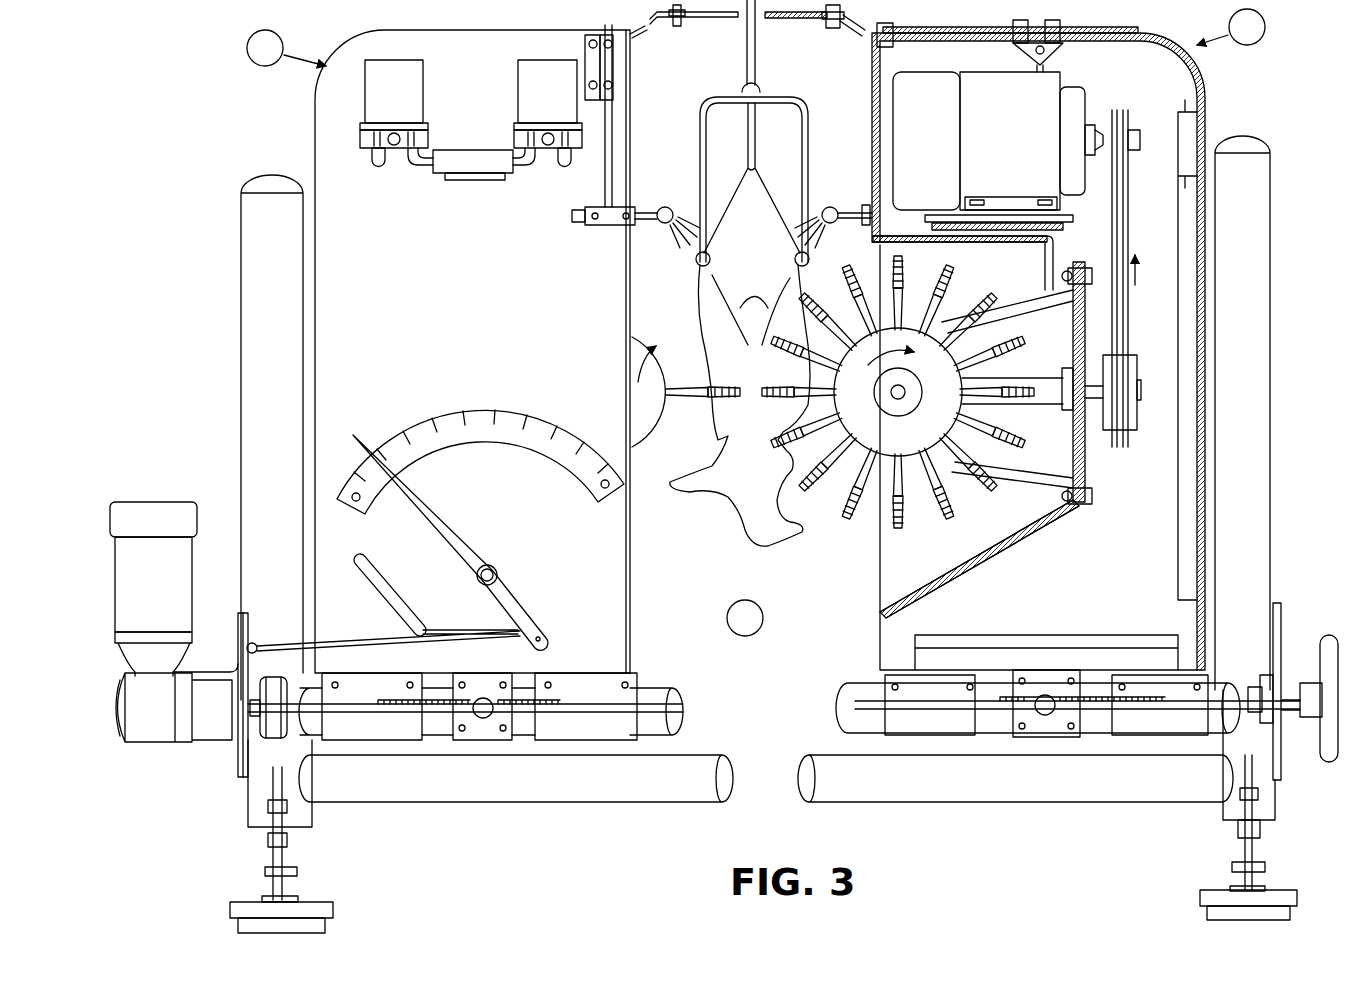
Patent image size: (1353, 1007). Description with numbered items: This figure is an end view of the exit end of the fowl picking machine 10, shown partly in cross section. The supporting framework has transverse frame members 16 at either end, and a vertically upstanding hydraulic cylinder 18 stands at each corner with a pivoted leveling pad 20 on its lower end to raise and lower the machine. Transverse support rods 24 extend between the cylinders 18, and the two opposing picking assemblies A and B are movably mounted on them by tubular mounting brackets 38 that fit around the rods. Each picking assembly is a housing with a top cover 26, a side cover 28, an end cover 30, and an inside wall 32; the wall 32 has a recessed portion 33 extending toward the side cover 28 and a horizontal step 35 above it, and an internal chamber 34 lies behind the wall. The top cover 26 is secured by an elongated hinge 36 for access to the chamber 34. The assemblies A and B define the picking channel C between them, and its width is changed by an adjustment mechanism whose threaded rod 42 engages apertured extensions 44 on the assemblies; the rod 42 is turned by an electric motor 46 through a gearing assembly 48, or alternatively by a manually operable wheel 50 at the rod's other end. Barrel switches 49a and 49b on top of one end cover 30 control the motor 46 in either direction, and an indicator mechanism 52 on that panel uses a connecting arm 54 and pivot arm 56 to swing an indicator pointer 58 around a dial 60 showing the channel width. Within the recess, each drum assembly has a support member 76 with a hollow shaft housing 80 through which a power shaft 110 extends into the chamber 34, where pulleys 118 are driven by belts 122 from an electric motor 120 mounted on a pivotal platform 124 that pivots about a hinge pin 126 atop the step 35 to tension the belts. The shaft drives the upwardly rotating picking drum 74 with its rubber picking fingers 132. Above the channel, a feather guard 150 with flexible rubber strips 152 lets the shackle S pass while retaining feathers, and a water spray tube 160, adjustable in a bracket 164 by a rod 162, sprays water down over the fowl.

The fowl picking machine 10 is at (1268, 72).
The transverse frame member 16 is at (1052, 797).
The hydraulic cylinder 18 is at (248, 385).
The leveling pad 20 is at (236, 906).
The transverse support rod 24 is at (672, 720).
The top cover 26 is at (1108, 34).
The side cover 28 is at (1203, 375).
The end cover 30 is at (472, 351).
The inside wall 32 is at (877, 626).
The recessed portion 33 is at (985, 562).
The internal chamber 34 is at (1063, 337).
The horizontal step 35 is at (975, 244).
The elongated hinge 36 is at (922, 31).
The tubular mounting bracket 38 is at (512, 735).
The threaded rod 42 is at (595, 712).
The apertured extension 44 is at (484, 698).
The electric motor 46 is at (179, 639).
The gearing assembly 48 is at (130, 750).
The barrel switch 49a is at (394, 113).
The barrel switch 49b is at (548, 113).
The manually operable wheel 50 is at (1327, 645).
The indicator mechanism 52 is at (435, 515).
The connecting arm 54 is at (364, 640).
The pivot arm 56 is at (398, 606).
The indicator pointer 58 is at (462, 536).
The dial 60 is at (506, 420).
The picking drum 74 is at (841, 392).
The support member 76 is at (1020, 474).
The hollow shaft housing 80 is at (1046, 395).
The power shaft 110 is at (1093, 398).
The pulley 118 is at (1130, 366).
The electric motor 120 is at (1016, 126).
The belt 122 is at (1129, 302).
The pivotal platform 124 is at (1063, 226).
The hinge pin 126 is at (1073, 218).
The picking finger 132 is at (998, 384).
The feather guard 150 is at (640, 34).
The flexible rubber strip 152 is at (705, 20).
The water spray tube 160 is at (663, 205).
The rod 162 is at (604, 180).
The bracket 164 is at (590, 55).
The shackle S is at (806, 106).
The picking assembly A is at (1231, 27).
The picking assembly B is at (286, 48).
The picking channel C is at (745, 618).